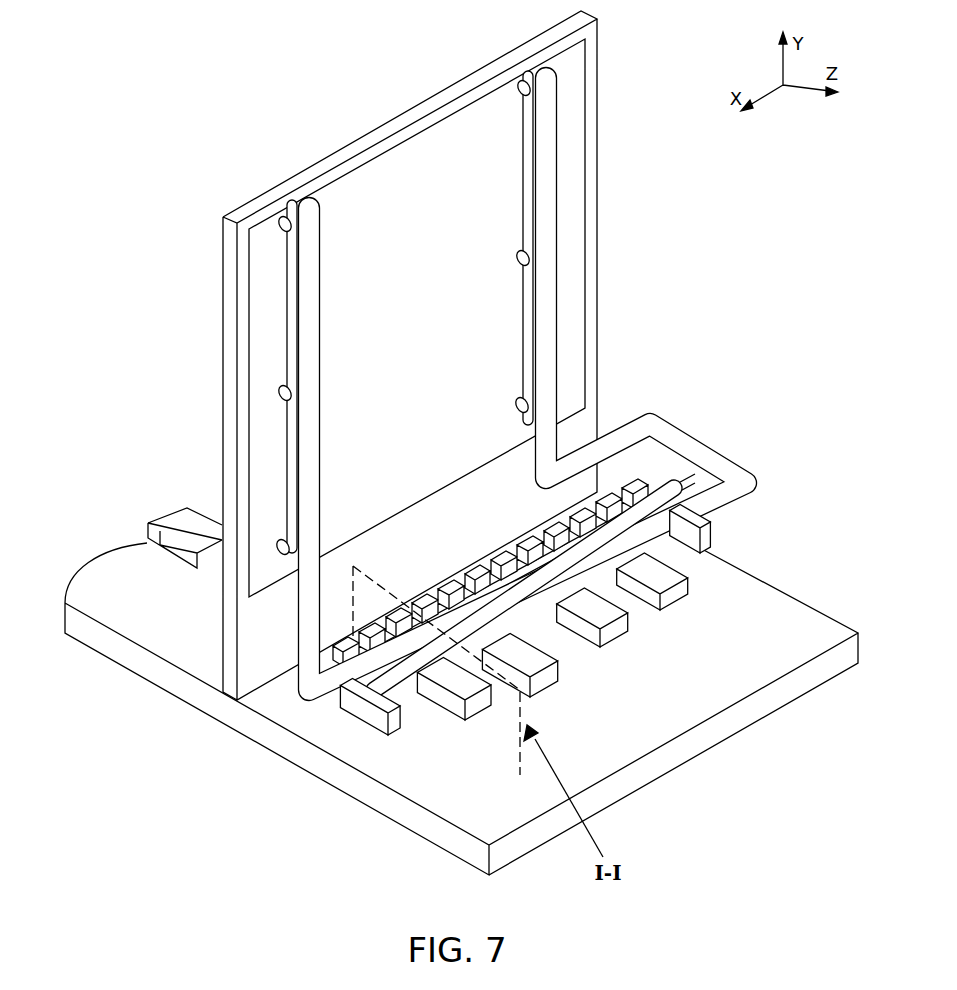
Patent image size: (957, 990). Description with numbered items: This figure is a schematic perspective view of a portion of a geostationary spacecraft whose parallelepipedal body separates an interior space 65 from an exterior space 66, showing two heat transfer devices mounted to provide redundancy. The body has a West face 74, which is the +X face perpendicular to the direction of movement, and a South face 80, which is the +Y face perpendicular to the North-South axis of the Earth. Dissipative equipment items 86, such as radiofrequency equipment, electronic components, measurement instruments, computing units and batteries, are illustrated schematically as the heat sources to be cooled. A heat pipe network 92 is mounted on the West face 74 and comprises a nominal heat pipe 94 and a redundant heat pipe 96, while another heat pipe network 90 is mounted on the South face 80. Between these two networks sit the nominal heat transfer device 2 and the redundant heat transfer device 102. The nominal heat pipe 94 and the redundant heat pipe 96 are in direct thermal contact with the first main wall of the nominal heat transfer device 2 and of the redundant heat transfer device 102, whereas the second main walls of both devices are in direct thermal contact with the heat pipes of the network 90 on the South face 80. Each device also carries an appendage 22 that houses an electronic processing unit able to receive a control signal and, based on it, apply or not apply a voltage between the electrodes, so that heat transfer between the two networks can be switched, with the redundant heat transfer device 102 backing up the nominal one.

The nominal heat transfer device 2 is at (637, 702).
The appendage 22 is at (457, 682).
The interior space 65 is at (221, 385).
The exterior space 66 is at (595, 246).
The West face 74 is at (598, 72).
The South face 80 is at (340, 772).
The dissipative equipment items 86 is at (147, 542).
The heat pipe network 90 is at (675, 559).
The heat pipe network 92 is at (548, 133).
The nominal heat pipe 94 is at (548, 190).
The redundant heat pipe 96 is at (287, 330).
The redundant heat transfer device 102 is at (584, 622).